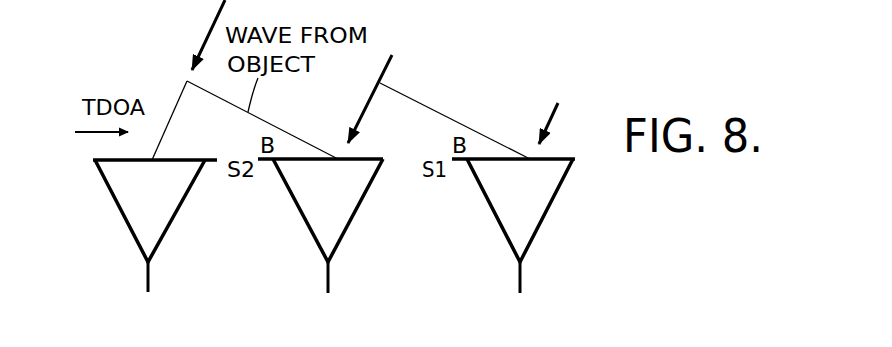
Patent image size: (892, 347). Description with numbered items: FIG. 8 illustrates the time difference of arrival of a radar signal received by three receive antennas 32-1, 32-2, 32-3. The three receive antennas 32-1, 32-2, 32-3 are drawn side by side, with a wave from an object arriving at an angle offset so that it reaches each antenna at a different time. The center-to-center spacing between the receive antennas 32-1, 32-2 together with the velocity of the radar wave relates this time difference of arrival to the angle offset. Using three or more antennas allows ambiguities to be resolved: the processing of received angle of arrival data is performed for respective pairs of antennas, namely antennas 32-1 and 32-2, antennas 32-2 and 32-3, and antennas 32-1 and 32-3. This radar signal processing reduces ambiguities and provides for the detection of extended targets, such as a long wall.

The receive antenna 32-1 is at (128, 225).
The receive antenna 32-2 is at (305, 227).
The receive antenna 32-3 is at (503, 235).